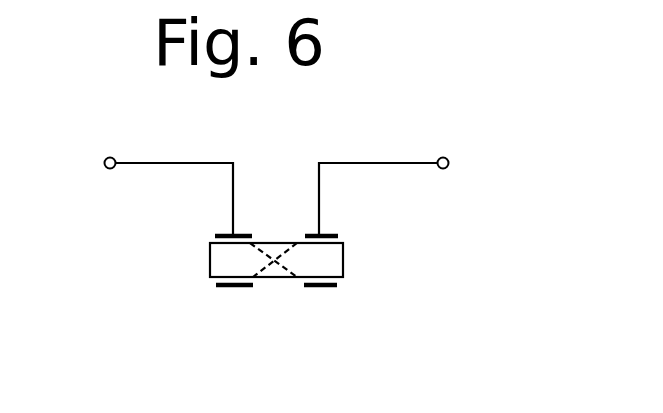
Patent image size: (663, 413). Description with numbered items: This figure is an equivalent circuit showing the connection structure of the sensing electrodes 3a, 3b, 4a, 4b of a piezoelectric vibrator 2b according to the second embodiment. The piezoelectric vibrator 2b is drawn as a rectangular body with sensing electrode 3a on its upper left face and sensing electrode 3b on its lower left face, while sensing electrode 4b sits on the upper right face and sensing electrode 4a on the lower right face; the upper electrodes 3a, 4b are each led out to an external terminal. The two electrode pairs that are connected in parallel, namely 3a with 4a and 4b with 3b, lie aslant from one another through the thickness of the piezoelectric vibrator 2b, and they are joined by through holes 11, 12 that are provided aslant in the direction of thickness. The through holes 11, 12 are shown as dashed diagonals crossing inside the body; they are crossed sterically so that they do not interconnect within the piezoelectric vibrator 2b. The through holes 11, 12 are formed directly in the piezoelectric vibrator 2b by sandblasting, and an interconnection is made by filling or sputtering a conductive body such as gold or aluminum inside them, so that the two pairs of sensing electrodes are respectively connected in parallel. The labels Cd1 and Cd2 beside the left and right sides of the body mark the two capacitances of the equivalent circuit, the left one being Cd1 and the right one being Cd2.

The piezoelectric vibrator 2b is at (281, 243).
The sensing electrode 3a is at (234, 237).
The sensing electrode 3b is at (220, 287).
The sensing electrode 4a is at (334, 287).
The sensing electrode 4b is at (324, 237).
The through hole 11 is at (296, 278).
The through hole 12 is at (262, 278).
The first capacitance Cd1 is at (176, 263).
The second capacitance Cd2 is at (376, 263).